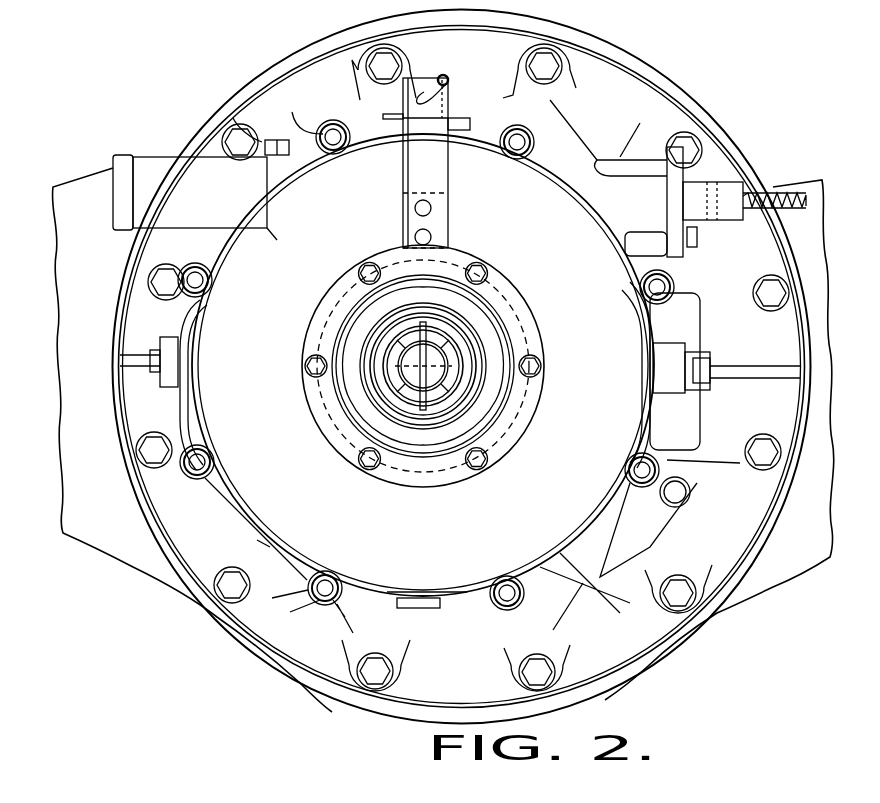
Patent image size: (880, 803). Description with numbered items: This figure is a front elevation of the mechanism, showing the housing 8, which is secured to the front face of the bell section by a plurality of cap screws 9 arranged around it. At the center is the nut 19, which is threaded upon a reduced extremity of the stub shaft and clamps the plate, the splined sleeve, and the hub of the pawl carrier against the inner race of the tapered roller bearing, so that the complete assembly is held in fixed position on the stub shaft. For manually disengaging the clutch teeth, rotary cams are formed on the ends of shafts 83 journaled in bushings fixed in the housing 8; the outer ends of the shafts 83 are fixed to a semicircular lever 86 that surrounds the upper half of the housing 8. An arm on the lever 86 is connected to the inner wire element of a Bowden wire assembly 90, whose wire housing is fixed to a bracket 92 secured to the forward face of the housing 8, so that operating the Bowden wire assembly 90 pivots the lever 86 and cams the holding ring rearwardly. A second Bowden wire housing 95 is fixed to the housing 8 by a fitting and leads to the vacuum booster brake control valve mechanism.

The housing 8 is at (452, 531).
The cap screws 9 is at (216, 458).
The nut 19 is at (396, 378).
The shafts 83 is at (155, 378).
The semicircular lever 86 is at (258, 206).
The Bowden wire assembly 90 is at (448, 79).
The bracket 92 is at (414, 174).
The Bowden wire housing 95 is at (783, 197).